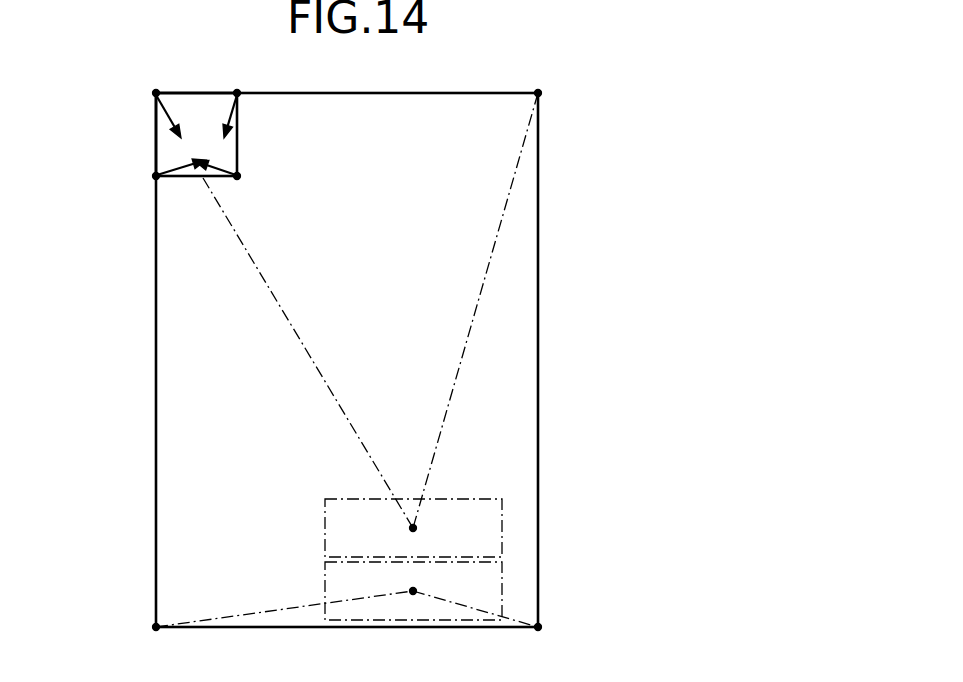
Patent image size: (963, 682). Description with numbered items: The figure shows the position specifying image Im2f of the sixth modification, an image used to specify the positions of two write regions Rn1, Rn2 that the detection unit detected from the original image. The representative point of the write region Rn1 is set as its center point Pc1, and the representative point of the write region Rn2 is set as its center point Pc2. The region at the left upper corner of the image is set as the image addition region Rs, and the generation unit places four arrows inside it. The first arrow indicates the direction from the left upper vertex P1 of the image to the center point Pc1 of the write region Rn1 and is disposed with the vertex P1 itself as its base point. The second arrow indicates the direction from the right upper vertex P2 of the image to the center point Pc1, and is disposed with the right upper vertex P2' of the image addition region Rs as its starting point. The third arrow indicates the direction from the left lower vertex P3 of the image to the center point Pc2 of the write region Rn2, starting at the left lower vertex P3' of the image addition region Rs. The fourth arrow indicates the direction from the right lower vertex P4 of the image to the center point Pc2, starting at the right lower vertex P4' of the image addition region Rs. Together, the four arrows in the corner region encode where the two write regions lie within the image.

The position specifying image Im2f is at (107, 137).
The image addition region Rs is at (194, 106).
The left upper vertex P1 is at (152, 94).
The right upper vertex P2 is at (569, 100).
The left lower vertex P3 is at (124, 637).
The right lower vertex P4 is at (570, 637).
The right upper vertex of the image addition region P2' is at (248, 69).
The left lower vertex of the image addition region P3' is at (122, 182).
The right lower vertex of the image addition region P4' is at (271, 183).
The center point of the write region Rn1 Pc1 is at (413, 524).
The center point of the write region Rn2 Pc2 is at (413, 595).
The write region Rn1 is at (468, 496).
The write region Rn2 is at (502, 598).